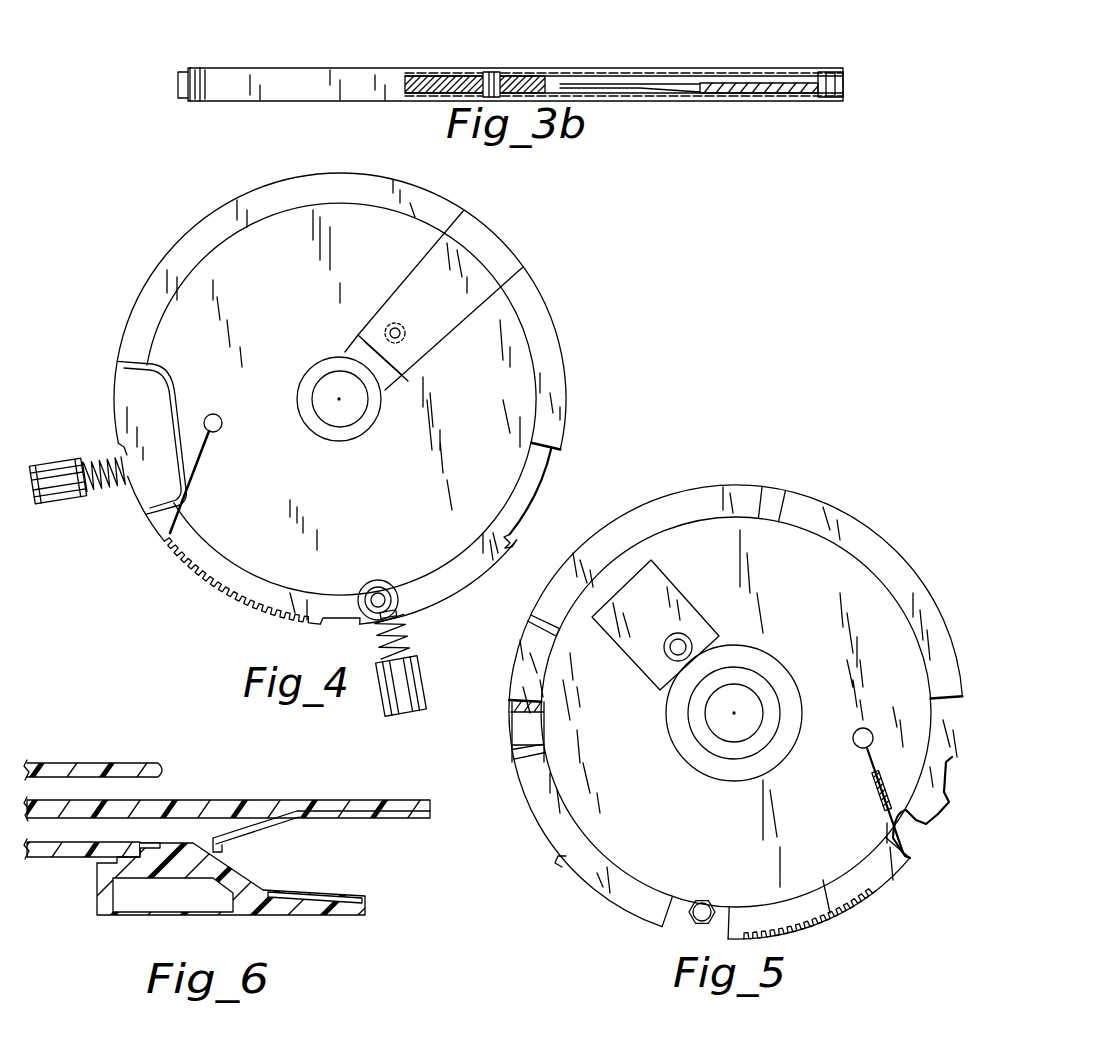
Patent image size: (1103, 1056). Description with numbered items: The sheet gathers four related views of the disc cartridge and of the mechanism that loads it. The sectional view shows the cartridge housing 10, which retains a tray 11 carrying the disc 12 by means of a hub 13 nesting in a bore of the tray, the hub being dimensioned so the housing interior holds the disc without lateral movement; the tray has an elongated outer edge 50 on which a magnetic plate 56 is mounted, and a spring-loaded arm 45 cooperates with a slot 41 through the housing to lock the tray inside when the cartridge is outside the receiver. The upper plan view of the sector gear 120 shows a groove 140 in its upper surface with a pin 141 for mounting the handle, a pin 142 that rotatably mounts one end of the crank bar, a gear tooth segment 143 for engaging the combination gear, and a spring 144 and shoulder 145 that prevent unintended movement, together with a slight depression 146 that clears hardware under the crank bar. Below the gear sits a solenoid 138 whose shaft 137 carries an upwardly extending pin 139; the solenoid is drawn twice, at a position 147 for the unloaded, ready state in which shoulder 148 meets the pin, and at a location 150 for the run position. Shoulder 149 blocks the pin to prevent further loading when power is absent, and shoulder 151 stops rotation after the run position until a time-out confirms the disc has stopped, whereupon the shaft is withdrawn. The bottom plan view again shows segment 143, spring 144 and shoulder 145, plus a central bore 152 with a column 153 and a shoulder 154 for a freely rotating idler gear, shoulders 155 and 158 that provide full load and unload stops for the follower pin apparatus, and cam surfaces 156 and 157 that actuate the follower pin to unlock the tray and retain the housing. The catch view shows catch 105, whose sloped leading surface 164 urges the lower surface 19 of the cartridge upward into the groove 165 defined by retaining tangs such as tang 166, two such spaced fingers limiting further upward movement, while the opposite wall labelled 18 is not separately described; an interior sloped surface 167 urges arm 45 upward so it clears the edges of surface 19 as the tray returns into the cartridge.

In FIG. 3B, the cartridge housing 10 is at (326, 36).
In FIG. 3B, the tray 11 is at (814, 88).
In FIG. 6, the tray 11 is at (218, 806).
In FIG. 3B, the disc 12 is at (684, 80).
In FIG. 3B, the hub 13 is at (512, 78).
In FIG. 6, the upper wall 18 is at (85, 768).
In FIG. 6, the lower surface 19 is at (70, 860).
In FIG. 3B, the slot 41 is at (710, 93).
In FIG. 3B, the spring-loaded arm 45 is at (632, 88).
In FIG. 6, the spring-loaded arm 45 is at (320, 820).
In FIG. 3B, the elongated outer edge 50 is at (192, 78).
In FIG. 3B, the magnetic plate 56 is at (178, 85).
In FIG. 6, the catch 105 is at (183, 917).
In FIG. 4, the sector gear 120 is at (290, 303).
In FIG. 5, the sector gear 120 is at (811, 592).
In FIG. 4, the shaft 137 is at (418, 630).
In FIG. 4, the solenoid 138 is at (58, 500).
In FIG. 4, the pin 139 is at (118, 490).
In FIG. 4, the groove 140 is at (483, 250).
In FIG. 4, the pin 141 is at (400, 328).
In FIG. 4, the pin 142 is at (381, 598).
In FIG. 5, the pin 142 is at (704, 900).
In FIG. 4, the gear tooth segment 143 is at (244, 624).
In FIG. 5, the gear tooth segment 143 is at (832, 924).
In FIG. 4, the spring 144 is at (198, 492).
In FIG. 5, the spring 144 is at (886, 800).
In FIG. 4, the shoulder 145 is at (520, 538).
In FIG. 5, the shoulder 145 is at (558, 863).
In FIG. 4, the depression 146 is at (128, 374).
In FIG. 4, the position 147 is at (58, 446).
In FIG. 4, the shoulder 148 is at (118, 450).
In FIG. 4, the shoulder 149 is at (130, 498).
In FIG. 4, the location 150 is at (368, 664).
In FIG. 4, the shoulder 151 is at (322, 620).
In FIG. 5, the central bore 152 is at (741, 708).
In FIG. 5, the column 153 is at (775, 707).
In FIG. 5, the shoulder 154 is at (706, 762).
In FIG. 5, the shoulder 155 is at (536, 752).
In FIG. 5, the cam surface 156 is at (516, 714).
In FIG. 5, the cam surface 157 is at (537, 616).
In FIG. 5, the shoulder 158 is at (775, 502).
In FIG. 6, the sloped leading surface 164 is at (100, 867).
In FIG. 6, the groove 165 is at (150, 862).
In FIG. 6, the tang 166 is at (150, 846).
In FIG. 6, the interior sloped surface 167 is at (237, 868).